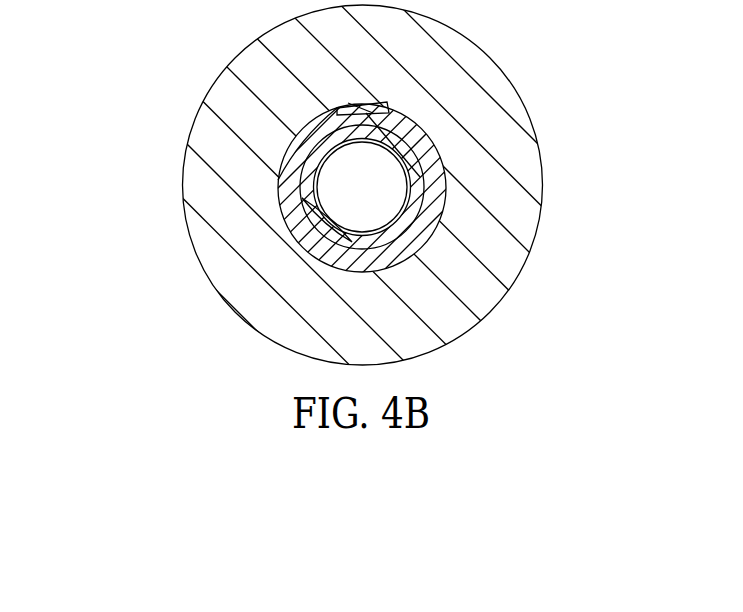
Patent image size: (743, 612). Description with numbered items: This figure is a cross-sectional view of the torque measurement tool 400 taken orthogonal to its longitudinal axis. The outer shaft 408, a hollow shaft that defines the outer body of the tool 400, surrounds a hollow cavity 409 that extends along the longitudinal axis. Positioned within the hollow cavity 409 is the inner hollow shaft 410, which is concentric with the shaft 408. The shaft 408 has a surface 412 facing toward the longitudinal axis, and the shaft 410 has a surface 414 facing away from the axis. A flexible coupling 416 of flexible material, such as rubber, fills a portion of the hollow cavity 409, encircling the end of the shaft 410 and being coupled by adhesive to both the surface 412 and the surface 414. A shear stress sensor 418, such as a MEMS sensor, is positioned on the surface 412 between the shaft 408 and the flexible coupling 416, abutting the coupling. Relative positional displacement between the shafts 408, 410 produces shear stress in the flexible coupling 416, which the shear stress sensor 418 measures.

The torque measurement tool 400 is at (156, 87).
The shaft 408 is at (543, 170).
The hollow cavity 409 is at (386, 202).
The shaft 410 is at (412, 190).
The surface 412 is at (283, 158).
The surface 414 is at (438, 148).
The flexible coupling 416 is at (432, 240).
The shear stress sensor 418 is at (368, 102).